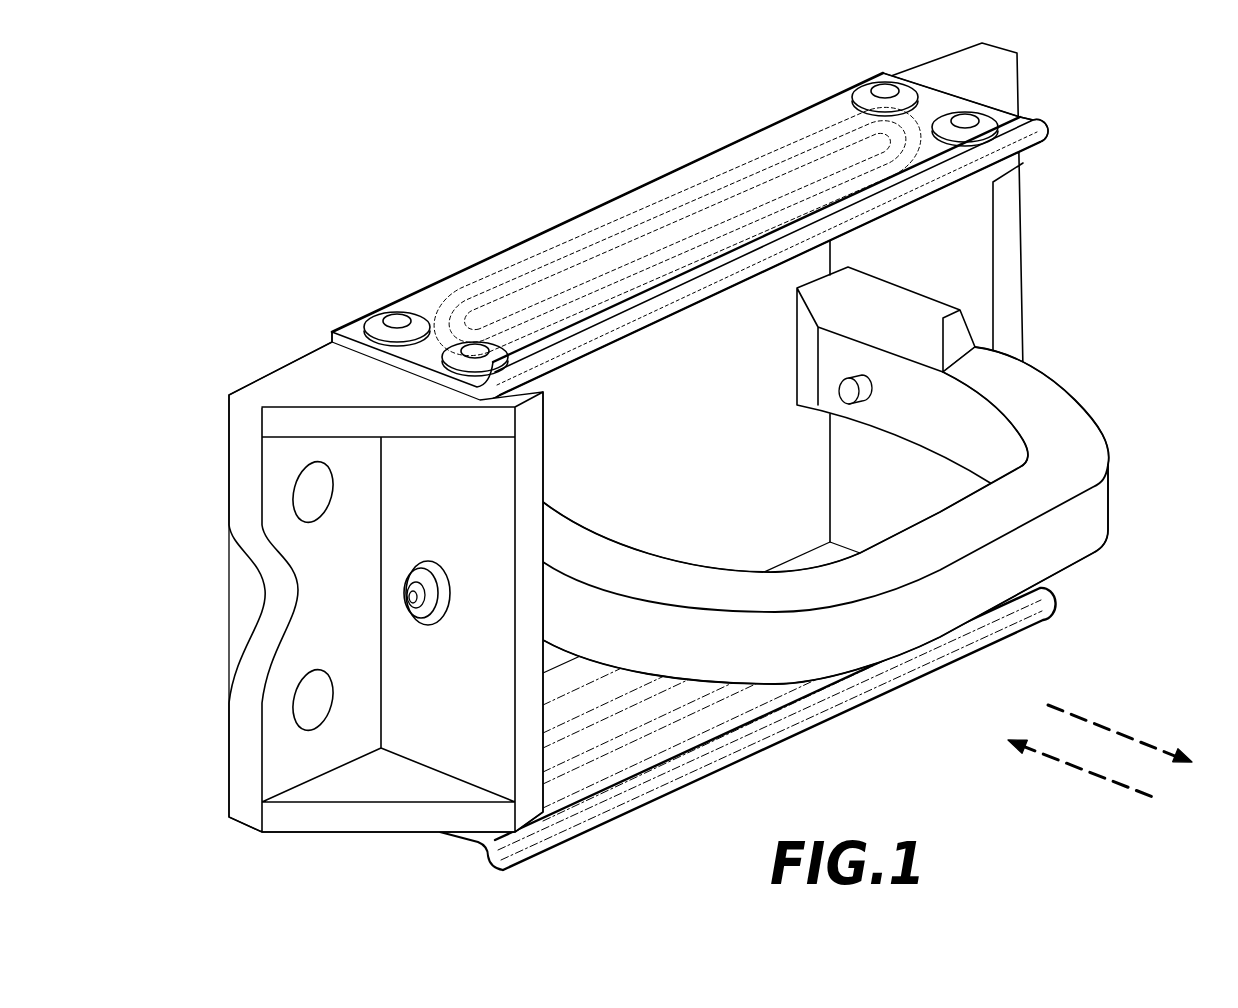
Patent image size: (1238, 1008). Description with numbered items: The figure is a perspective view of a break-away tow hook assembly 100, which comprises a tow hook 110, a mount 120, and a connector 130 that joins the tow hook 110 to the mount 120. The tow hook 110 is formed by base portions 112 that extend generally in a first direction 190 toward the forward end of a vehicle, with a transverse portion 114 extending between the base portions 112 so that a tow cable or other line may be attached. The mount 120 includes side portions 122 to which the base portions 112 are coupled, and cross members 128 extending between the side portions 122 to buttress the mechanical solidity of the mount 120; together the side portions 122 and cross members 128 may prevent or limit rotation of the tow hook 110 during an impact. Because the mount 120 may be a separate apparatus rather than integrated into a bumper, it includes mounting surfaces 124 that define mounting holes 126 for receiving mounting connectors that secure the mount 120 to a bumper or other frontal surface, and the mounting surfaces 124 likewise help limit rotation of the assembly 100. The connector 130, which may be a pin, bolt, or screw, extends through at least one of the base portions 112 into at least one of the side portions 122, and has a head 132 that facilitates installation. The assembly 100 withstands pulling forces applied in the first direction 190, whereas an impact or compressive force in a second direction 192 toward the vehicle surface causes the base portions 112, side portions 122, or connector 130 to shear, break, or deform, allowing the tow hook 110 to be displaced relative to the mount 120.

The break-away tow hook assembly 100 is at (133, 92).
The tow hook 110 is at (1176, 536).
The base portions 112 is at (1038, 378).
The transverse portion 114 is at (1066, 573).
The mount 120 is at (1130, 90).
The side portions 122 is at (968, 292).
The mounting surfaces 124 is at (359, 575).
The mounting holes 126 is at (247, 597).
The cross members 128 is at (690, 237).
The connector 130 is at (873, 375).
The head 132 is at (300, 593).
The first direction 190 is at (1118, 728).
The second direction 192 is at (1088, 773).